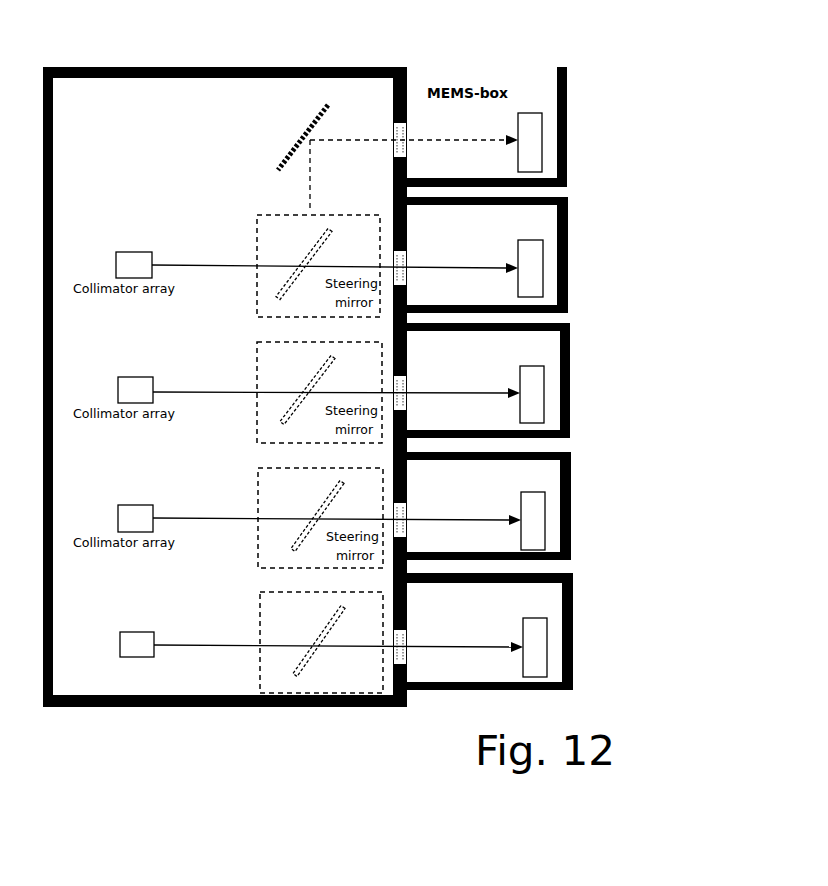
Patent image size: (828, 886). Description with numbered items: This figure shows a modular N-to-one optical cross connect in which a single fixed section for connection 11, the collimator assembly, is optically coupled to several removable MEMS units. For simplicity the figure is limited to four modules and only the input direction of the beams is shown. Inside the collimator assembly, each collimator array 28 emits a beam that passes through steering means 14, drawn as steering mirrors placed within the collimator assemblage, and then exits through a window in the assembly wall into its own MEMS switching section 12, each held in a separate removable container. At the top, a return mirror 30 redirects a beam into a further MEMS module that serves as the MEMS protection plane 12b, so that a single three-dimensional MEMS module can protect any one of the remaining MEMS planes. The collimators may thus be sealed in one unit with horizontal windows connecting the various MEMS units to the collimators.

The section for connection 11 is at (342, 707).
The section for switching with the MEMS 12 is at (568, 288).
The MEMS protection plane 12b is at (567, 133).
The steering means 14 is at (270, 680).
The collimator array 28 is at (142, 640).
The return mirror 30 is at (319, 115).